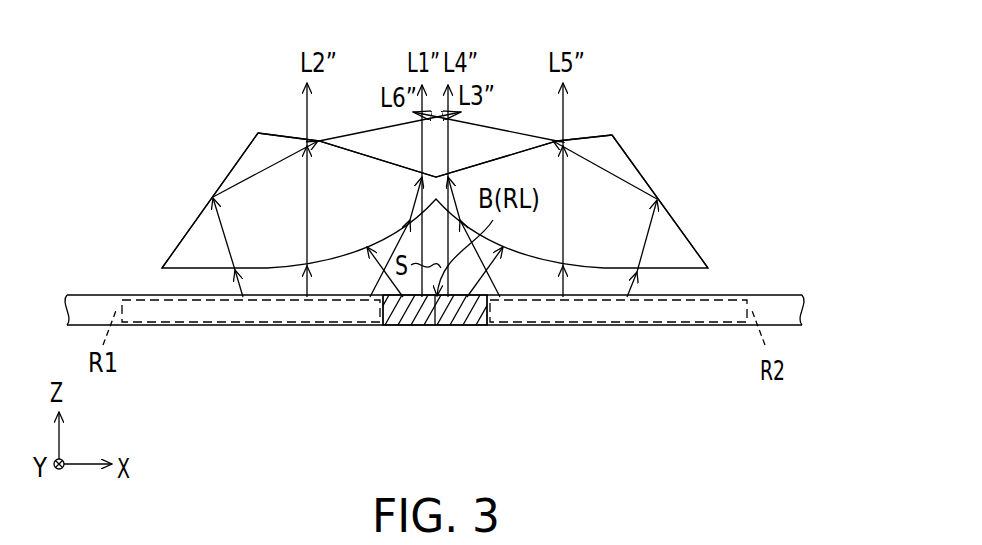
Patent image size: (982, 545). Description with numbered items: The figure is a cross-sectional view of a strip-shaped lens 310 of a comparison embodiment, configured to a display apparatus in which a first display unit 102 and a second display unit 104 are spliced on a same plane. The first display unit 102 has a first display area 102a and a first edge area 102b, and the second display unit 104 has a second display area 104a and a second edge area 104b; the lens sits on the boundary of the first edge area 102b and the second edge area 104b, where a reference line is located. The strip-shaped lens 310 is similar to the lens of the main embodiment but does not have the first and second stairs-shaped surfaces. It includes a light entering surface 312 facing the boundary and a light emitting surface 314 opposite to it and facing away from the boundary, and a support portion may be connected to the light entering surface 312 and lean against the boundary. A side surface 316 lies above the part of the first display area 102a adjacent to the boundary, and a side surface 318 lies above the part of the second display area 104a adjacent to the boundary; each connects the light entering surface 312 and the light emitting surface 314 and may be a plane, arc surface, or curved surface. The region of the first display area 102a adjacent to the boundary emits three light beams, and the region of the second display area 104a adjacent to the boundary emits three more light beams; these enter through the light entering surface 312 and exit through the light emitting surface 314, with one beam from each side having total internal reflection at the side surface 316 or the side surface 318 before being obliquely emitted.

The strip-shaped lens 310 is at (777, 150).
The light entering surface 312 is at (401, 326).
The light emitting surface 314 is at (377, 152).
The side surface 316 is at (198, 216).
The side surface 318 is at (672, 219).
The first display unit 102 is at (252, 369).
The first display area 102a is at (261, 316).
The first edge area 102b is at (382, 317).
The second display unit 104 is at (617, 369).
The second display area 104a is at (610, 315).
The second edge area 104b is at (488, 317).